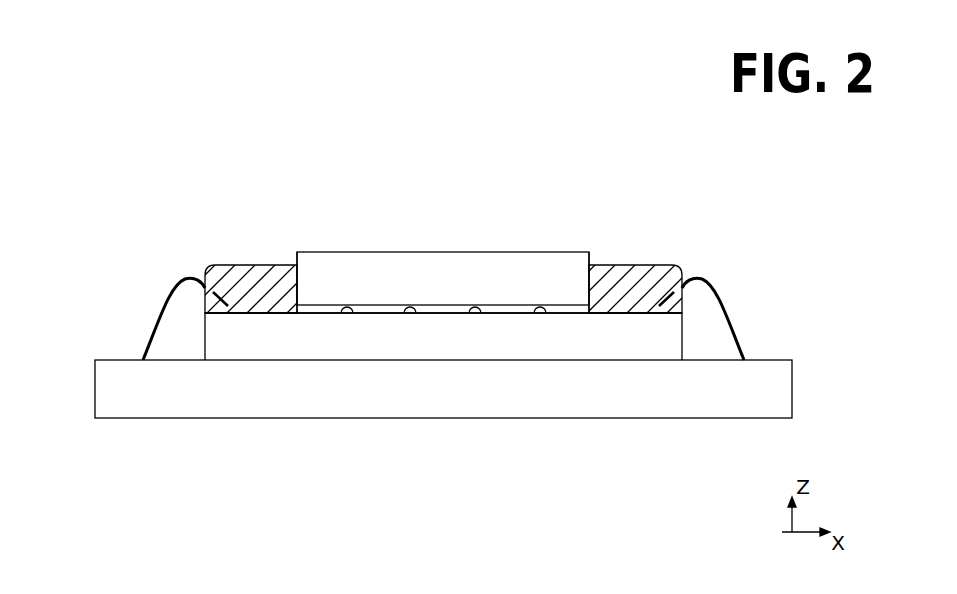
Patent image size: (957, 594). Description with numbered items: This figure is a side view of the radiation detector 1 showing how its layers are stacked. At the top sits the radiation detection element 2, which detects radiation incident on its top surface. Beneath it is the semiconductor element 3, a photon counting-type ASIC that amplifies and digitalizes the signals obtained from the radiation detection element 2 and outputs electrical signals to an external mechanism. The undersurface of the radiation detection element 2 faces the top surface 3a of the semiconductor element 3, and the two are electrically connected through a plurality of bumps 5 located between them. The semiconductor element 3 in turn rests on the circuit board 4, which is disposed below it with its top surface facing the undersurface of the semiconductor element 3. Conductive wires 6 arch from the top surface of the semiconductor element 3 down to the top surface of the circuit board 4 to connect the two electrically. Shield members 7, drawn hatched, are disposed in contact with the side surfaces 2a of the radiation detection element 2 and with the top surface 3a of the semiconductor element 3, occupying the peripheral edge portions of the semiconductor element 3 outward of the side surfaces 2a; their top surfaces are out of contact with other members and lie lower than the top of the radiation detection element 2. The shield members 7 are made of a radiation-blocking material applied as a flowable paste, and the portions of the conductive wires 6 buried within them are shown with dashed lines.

The radiation detector 1 is at (100, 90).
The radiation detection element 2 is at (374, 252).
The side surfaces of the radiation detection element 2a is at (297, 263).
The semiconductor element 3 is at (682, 348).
The top surface of the semiconductor element 3a is at (312, 315).
The circuit board 4 is at (288, 418).
The bumps 5 is at (417, 304).
The conductive wires 6 is at (162, 316).
The shield members 7 is at (207, 271).